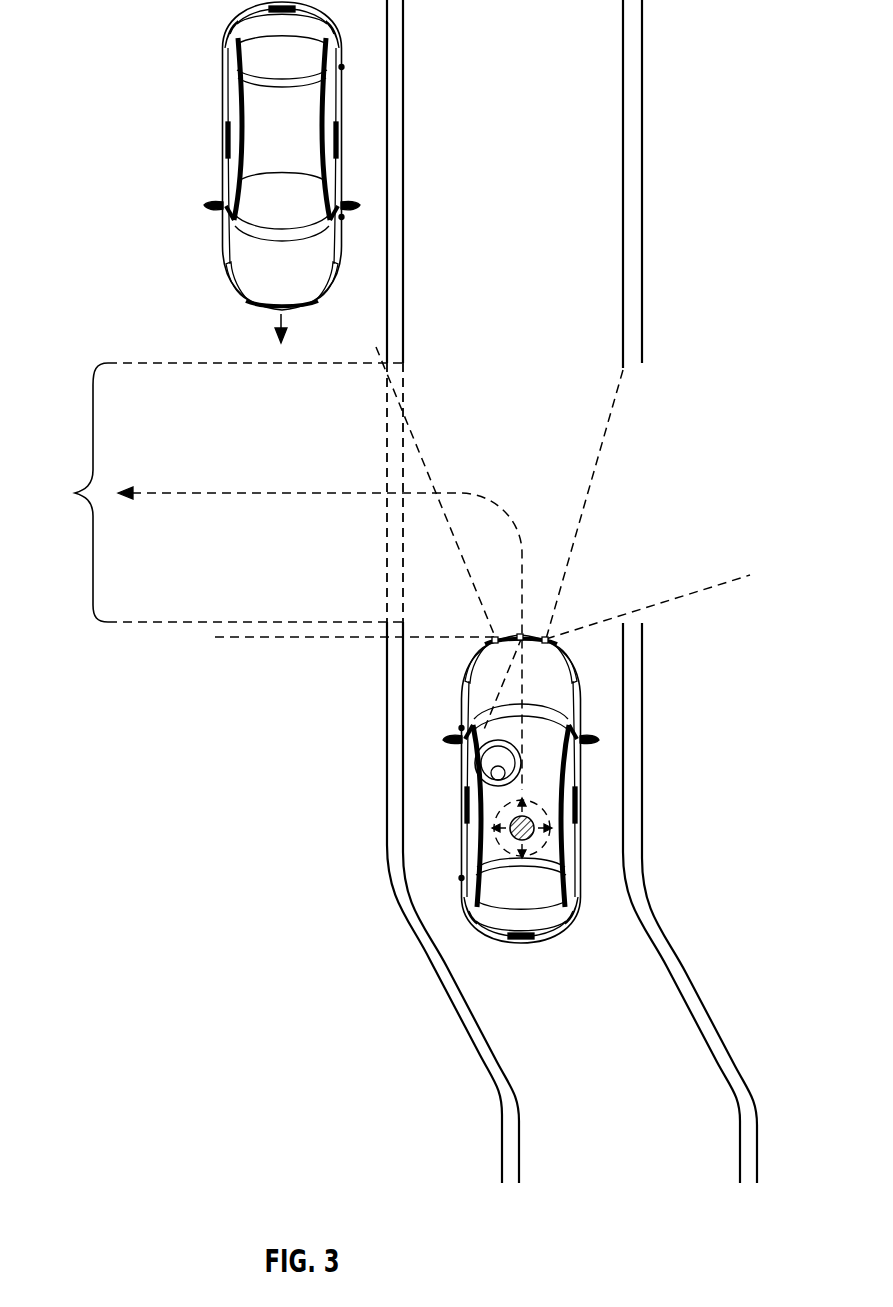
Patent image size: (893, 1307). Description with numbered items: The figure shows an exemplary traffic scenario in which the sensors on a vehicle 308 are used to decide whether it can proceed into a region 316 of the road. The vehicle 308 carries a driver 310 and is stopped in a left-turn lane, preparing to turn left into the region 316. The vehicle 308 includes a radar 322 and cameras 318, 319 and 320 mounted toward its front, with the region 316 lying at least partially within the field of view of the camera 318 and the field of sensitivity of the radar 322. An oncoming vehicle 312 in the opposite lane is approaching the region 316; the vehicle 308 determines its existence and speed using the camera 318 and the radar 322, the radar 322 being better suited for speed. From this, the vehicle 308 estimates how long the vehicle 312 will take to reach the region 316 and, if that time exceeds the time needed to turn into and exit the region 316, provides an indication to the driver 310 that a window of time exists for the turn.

The vehicle 308 is at (521, 948).
The driver 310 is at (478, 768).
The vehicle 312 is at (222, 138).
The region 316 is at (216, 492).
The camera 318 is at (494, 637).
The camera 319 is at (548, 637).
The camera 320 is at (519, 633).
The radar 322 is at (490, 841).